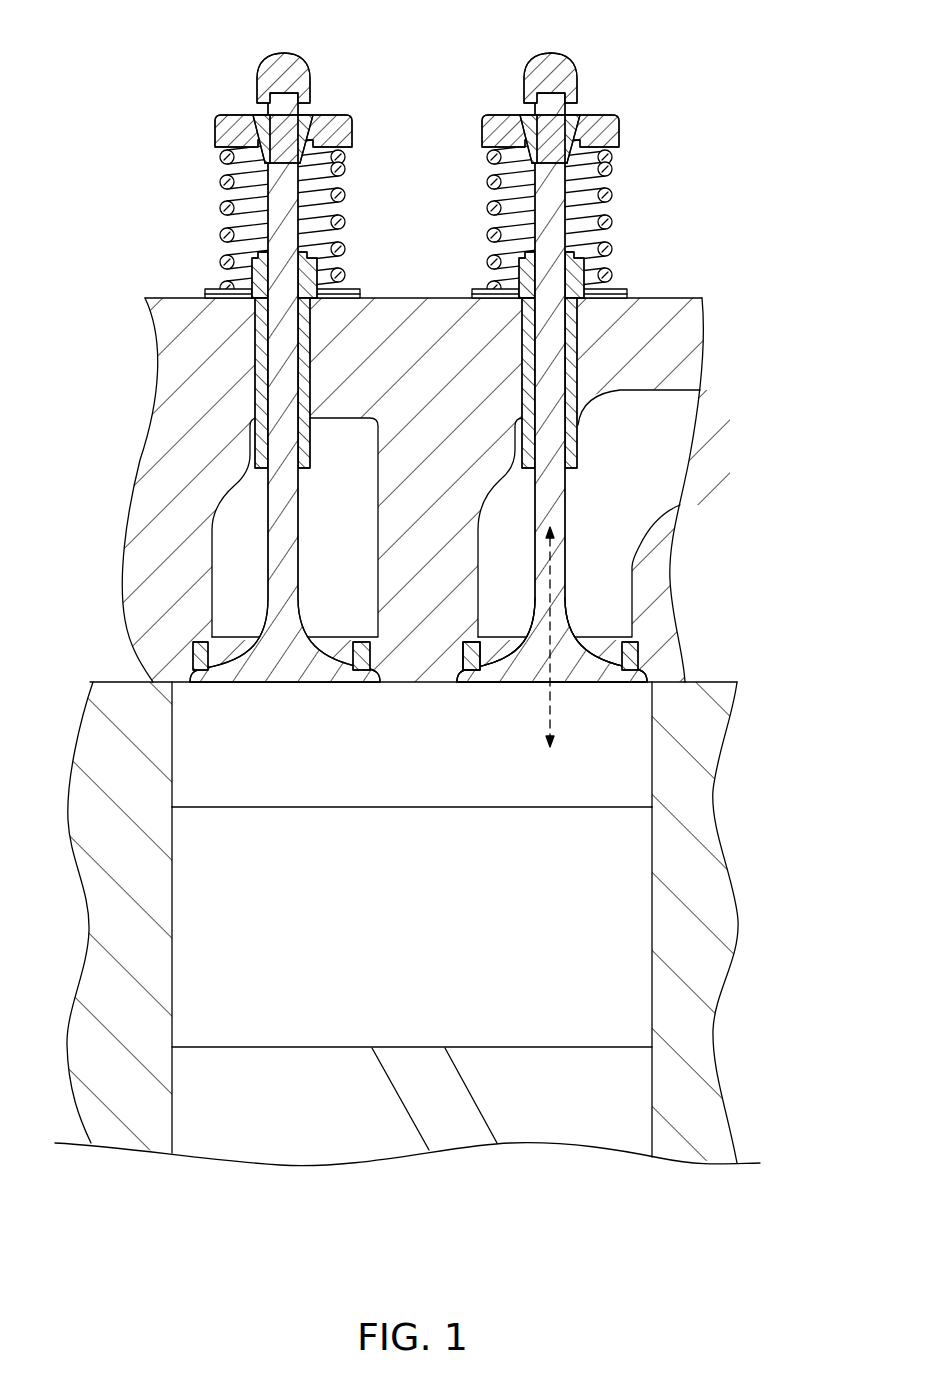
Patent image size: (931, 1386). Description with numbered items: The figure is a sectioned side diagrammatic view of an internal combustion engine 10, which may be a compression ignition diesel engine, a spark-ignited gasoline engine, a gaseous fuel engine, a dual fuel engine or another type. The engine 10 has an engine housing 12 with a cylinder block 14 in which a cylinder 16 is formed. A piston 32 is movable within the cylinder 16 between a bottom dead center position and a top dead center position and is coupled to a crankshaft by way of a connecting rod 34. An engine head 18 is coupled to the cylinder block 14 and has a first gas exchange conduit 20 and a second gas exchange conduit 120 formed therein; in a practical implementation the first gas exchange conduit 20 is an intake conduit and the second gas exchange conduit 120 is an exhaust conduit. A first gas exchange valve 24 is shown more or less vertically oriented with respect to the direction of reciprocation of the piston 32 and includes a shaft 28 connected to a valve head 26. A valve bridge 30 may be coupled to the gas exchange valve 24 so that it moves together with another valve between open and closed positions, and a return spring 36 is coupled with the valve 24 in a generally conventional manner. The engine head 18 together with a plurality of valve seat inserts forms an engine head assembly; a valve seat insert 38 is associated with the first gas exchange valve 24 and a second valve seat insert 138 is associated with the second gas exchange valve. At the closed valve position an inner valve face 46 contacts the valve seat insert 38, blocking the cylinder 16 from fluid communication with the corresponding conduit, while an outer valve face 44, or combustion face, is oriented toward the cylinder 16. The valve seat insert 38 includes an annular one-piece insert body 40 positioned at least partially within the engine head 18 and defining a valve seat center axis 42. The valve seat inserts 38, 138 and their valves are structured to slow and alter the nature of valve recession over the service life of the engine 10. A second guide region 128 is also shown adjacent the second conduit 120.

The internal combustion engine 10 is at (436, 583).
The engine housing 12 is at (447, 373).
The cylinder block 14 is at (699, 769).
The cylinder 16 is at (428, 780).
The engine head 18 is at (649, 575).
The first gas exchange conduit 20 is at (637, 548).
The first gas exchange valve 24 is at (562, 517).
The valve head 26 is at (575, 645).
The shaft 28 is at (556, 392).
The valve bridge 30 is at (538, 60).
The piston 32 is at (630, 955).
The connecting rod 34 is at (457, 1097).
The return spring 36 is at (607, 182).
The valve seat insert 38 is at (460, 662).
The insert body 40 is at (478, 632).
The valve seat center axis 42 is at (550, 720).
The outer valve face 44 is at (658, 680).
The inner valve face 46 is at (655, 645).
The second gas exchange conduit 120 is at (215, 565).
The second valve guide 128 is at (283, 392).
The valve seat insert 138 is at (188, 662).